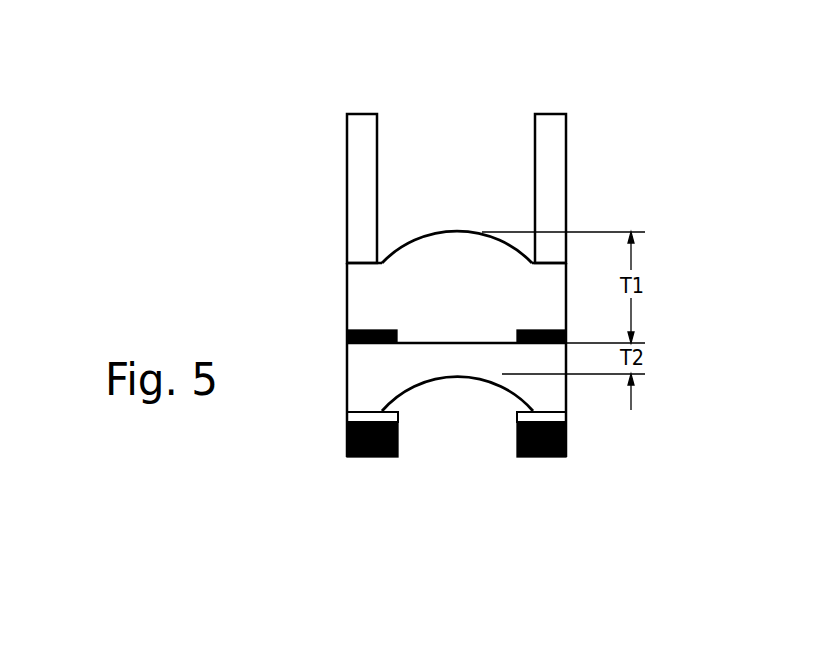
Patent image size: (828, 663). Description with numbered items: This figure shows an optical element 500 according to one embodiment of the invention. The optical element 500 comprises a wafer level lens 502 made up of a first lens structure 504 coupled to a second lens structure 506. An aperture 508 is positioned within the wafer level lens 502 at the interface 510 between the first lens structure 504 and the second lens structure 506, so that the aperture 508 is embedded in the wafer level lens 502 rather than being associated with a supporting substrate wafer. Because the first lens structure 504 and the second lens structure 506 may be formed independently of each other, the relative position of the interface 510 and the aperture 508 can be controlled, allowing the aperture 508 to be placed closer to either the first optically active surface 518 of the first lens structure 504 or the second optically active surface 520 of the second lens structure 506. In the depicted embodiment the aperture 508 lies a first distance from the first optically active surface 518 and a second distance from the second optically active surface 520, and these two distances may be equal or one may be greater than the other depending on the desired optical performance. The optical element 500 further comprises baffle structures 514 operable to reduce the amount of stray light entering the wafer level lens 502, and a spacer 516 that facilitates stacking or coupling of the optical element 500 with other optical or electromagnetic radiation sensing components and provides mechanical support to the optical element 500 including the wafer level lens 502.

The optical element 500 is at (182, 184).
The wafer level lens 502 is at (479, 264).
The first lens structure 504 is at (450, 250).
The second lens structure 506 is at (433, 363).
The aperture 508 is at (347, 418).
The interface 510 is at (483, 347).
The baffle structures 514 is at (528, 455).
The spacer 516 is at (550, 143).
The first optically active surface 518 is at (415, 233).
The second optically active surface 520 is at (450, 377).